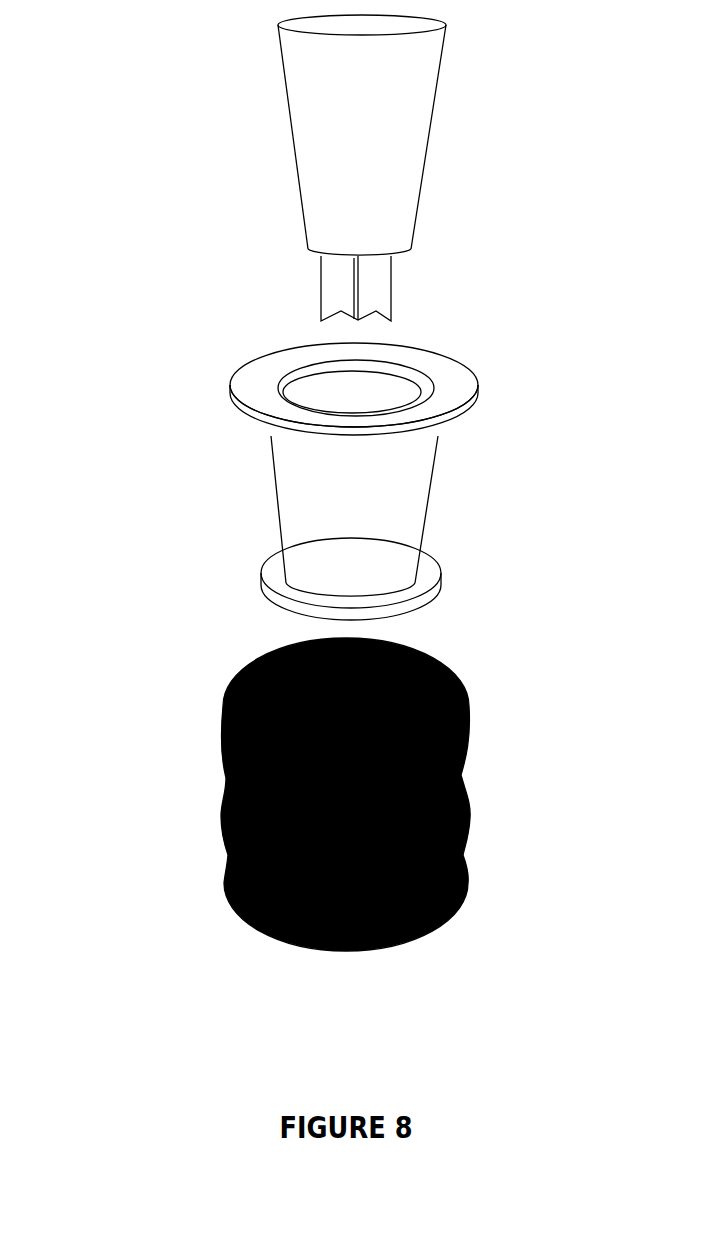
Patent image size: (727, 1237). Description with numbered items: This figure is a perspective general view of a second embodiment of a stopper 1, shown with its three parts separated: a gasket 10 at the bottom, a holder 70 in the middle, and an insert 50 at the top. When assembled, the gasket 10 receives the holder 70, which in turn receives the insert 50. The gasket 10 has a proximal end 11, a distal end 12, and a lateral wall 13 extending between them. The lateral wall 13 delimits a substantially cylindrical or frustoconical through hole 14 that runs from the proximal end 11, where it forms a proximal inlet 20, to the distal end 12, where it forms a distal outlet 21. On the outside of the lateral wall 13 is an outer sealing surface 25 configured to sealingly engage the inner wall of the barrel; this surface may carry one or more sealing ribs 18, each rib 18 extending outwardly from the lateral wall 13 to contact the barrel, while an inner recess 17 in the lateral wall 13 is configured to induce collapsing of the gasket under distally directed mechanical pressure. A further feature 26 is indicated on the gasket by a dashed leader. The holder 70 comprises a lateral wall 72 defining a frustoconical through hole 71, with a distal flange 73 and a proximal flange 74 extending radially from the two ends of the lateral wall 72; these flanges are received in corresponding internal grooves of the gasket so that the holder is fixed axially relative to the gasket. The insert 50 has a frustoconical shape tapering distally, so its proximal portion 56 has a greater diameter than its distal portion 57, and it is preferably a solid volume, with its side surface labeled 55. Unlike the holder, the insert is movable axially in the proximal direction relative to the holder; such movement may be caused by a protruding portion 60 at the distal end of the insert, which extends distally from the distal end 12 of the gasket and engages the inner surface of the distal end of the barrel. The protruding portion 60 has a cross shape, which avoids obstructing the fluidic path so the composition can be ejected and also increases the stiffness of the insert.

The stopper 1 is at (150, 332).
The gasket 10 is at (326, 797).
The proximal end 11 is at (362, 643).
The distal end 12 is at (382, 937).
The lateral wall 13 is at (224, 828).
The through hole 14 is at (328, 676).
The inner recess 17 is at (430, 815).
The sealing rib 18 is at (215, 742).
The proximal inlet 20 is at (308, 688).
The distal outlet 21 is at (308, 948).
The outer sealing surface 25 is at (457, 770).
The groove 26 is at (440, 745).
The insert 50 is at (346, 168).
The sidewall 55 is at (312, 186).
The proximal portion 56 is at (436, 68).
The distal portion 57 is at (402, 254).
The protruding portion 60 is at (315, 278).
The holder 70 is at (356, 462).
The frustoconical through hole 71 is at (385, 385).
The lateral wall 72 is at (408, 496).
The distal flange 73 is at (262, 565).
The proximal flange 74 is at (455, 402).